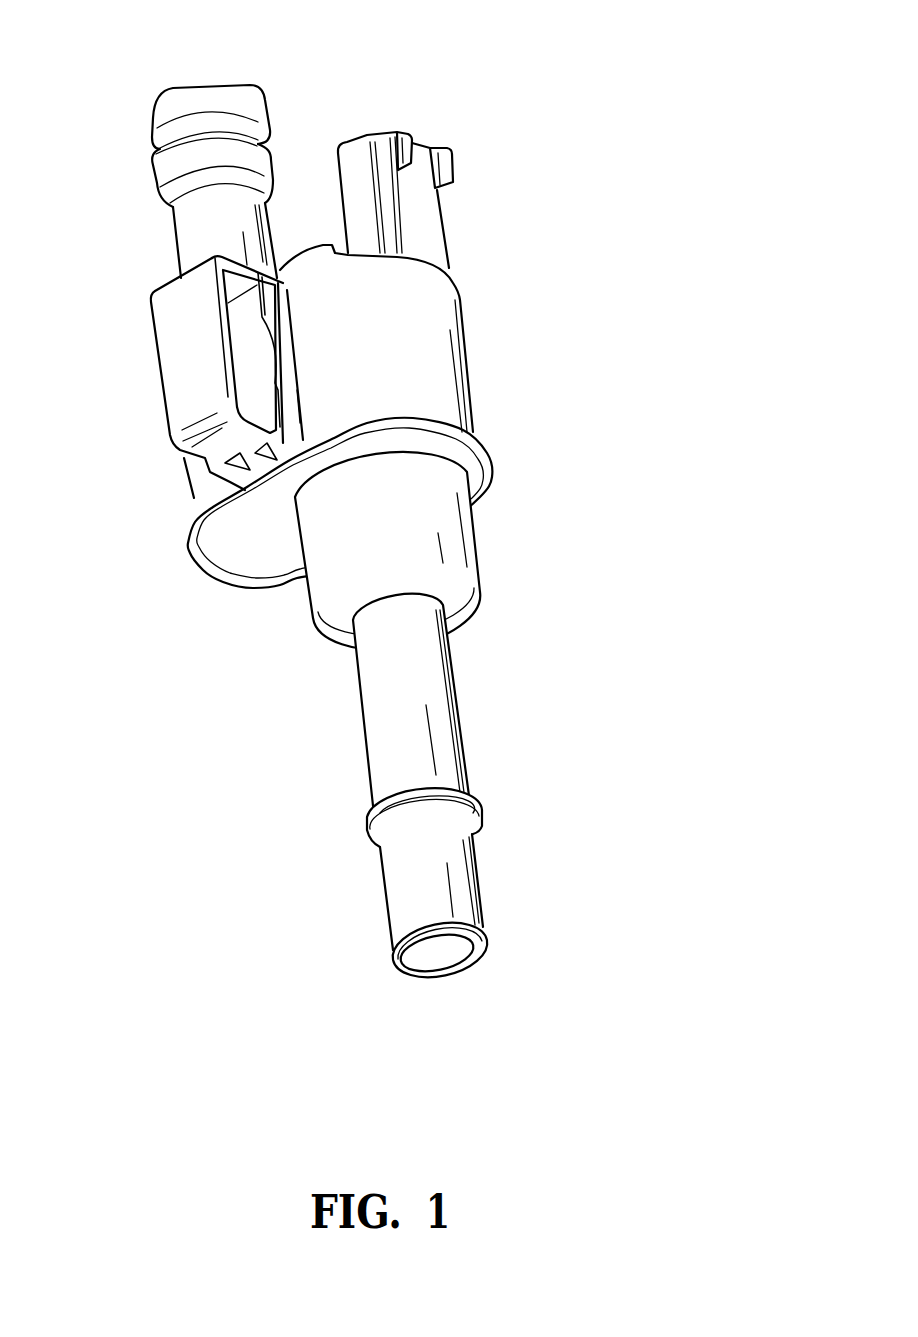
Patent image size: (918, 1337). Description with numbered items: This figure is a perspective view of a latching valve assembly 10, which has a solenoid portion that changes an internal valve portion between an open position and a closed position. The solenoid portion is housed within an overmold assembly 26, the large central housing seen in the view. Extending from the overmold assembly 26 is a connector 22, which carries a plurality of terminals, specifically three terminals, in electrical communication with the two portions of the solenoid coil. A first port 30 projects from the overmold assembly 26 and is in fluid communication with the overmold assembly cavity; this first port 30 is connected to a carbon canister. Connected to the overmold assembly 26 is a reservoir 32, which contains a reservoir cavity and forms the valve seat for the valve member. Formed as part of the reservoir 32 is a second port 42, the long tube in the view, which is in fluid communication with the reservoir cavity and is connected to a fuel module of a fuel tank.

The latching valve assembly 10 is at (396, 536).
The connector 22 is at (486, 169).
The overmold assembly 26 is at (410, 362).
The first port 30 is at (160, 112).
The reservoir 32 is at (332, 558).
The second port 42 is at (457, 973).